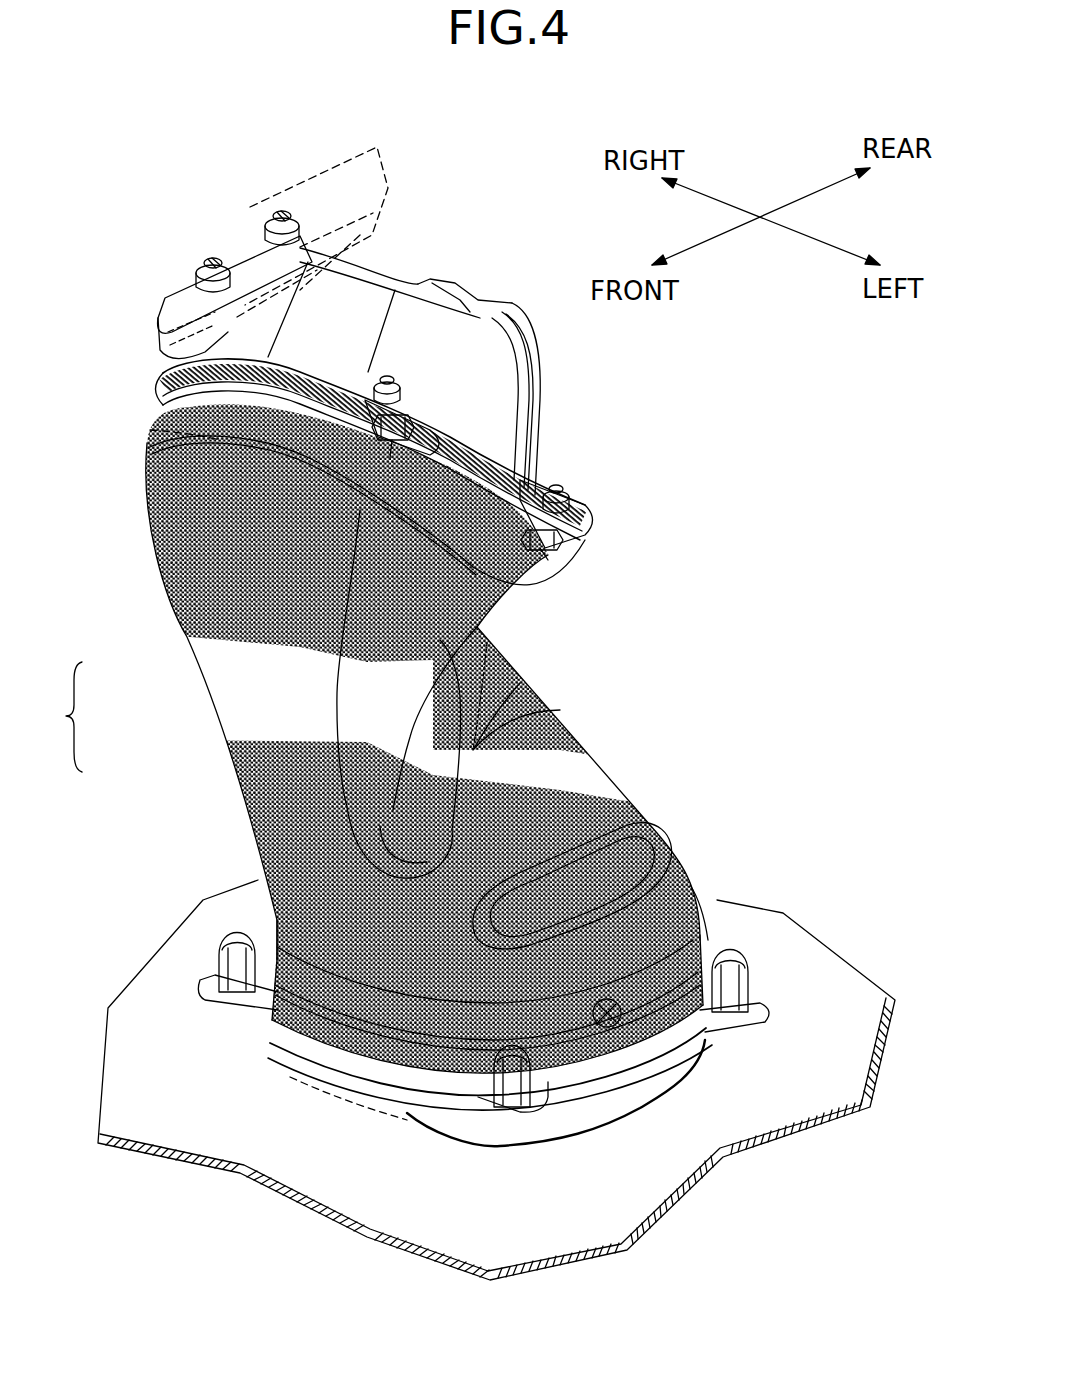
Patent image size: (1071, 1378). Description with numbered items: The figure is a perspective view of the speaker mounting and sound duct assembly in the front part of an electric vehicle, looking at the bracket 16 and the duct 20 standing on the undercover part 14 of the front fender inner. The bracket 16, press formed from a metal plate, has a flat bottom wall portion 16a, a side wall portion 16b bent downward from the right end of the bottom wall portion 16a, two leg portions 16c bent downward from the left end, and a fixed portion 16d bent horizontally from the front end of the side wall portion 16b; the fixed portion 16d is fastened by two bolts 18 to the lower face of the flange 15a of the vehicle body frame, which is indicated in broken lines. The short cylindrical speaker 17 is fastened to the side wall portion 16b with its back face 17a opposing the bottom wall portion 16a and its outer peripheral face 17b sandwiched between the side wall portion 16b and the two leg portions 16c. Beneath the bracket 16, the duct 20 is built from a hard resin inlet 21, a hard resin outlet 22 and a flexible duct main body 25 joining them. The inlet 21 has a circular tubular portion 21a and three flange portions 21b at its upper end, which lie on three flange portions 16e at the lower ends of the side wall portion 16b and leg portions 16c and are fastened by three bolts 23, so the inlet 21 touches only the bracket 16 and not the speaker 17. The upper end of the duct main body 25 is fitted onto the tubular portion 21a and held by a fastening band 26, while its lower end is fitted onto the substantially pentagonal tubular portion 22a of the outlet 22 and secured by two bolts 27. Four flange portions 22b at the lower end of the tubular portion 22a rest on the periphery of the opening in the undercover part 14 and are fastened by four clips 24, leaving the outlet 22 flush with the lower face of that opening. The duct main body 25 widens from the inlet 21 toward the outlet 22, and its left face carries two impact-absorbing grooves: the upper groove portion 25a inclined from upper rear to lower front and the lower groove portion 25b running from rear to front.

The undercover part 14 is at (845, 972).
The flange 15a is at (334, 175).
The bracket 16 is at (455, 292).
The bottom wall portion 16a is at (377, 282).
The side wall portion 16b is at (162, 355).
The leg portions 16c is at (402, 333).
The fixed portion 16d is at (188, 292).
The flange portions 16e is at (370, 374).
The speaker 17 is at (513, 423).
The back face 17a is at (484, 326).
The outer peripheral face 17b is at (494, 404).
The bolts 18 is at (282, 212).
The duct 20 is at (56, 717).
The inlet 21 is at (317, 490).
The tubular portion 21a is at (411, 738).
The flange portions 21b is at (440, 423).
The outlet 22 is at (264, 940).
The tubular portion 22a is at (353, 1040).
The flange portions 22b is at (257, 1003).
The bolts 23 is at (396, 458).
The clips 24 is at (216, 948).
The duct main body 25 is at (222, 745).
The groove portion 25a is at (553, 710).
The groove portion 25b is at (620, 885).
The fastening band 26 is at (188, 400).
The bolts 27 is at (612, 1028).